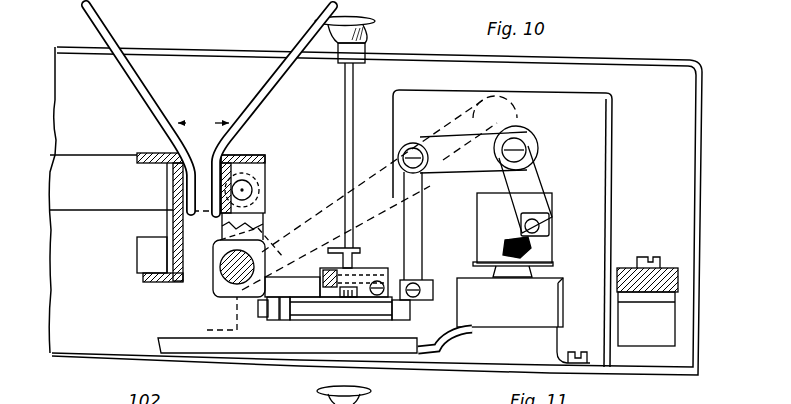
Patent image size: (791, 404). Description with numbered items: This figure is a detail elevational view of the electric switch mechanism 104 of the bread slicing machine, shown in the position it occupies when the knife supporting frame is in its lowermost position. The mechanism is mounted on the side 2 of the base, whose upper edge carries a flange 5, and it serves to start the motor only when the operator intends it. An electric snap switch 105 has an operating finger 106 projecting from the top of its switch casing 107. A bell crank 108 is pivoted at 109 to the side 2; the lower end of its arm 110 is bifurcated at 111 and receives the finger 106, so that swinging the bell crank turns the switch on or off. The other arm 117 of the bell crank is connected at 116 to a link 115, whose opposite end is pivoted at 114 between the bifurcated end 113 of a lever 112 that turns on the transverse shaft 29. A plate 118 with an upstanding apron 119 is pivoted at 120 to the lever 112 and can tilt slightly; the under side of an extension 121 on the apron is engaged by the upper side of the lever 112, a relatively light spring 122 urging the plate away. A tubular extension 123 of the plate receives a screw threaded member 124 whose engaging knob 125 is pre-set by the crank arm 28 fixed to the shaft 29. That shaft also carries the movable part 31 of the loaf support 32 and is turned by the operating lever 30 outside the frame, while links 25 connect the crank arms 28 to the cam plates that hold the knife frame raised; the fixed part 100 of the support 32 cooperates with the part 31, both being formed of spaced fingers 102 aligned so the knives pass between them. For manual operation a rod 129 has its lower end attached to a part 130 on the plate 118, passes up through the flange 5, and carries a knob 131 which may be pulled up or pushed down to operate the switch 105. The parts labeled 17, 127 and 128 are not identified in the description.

The side of the base 2 is at (452, 63).
The flange 5 is at (242, 50).
The receptacle 17 is at (668, 285).
The links 25 is at (92, 205).
The crank arms 28 is at (221, 229).
The transverse shaft 29 is at (226, 278).
The operating lever 30 is at (508, 100).
The movable part of the loaf support 31 is at (313, 25).
The loaf receiving platform 32 is at (203, 124).
The rigid part of the loaf support 100 is at (111, 48).
The fingers 102 is at (209, 109).
The switch mechanism 104 is at (544, 181).
The electric snap switch 105 is at (553, 300).
The operating finger 106 is at (549, 222).
The switch casing 107 is at (565, 283).
The bell crank 108 is at (455, 175).
The pivot 109 is at (538, 141).
The arm of the bell crank 110 is at (543, 188).
The bifurcation 111 is at (549, 229).
The lever 112 is at (297, 285).
The bifurcated end 113 is at (446, 330).
The pivot 114 is at (420, 288).
The link 115 is at (422, 240).
The pivot 116 is at (411, 147).
The arm of the bell crank 117 is at (483, 168).
The plate 118 is at (310, 348).
The apron 119 is at (389, 264).
The pivot 120 is at (377, 296).
The extension 121 is at (358, 262).
The spring 122 is at (315, 327).
The tubular extension 123 is at (323, 327).
The screw threaded member 124 is at (273, 323).
The engaging knob 125 is at (260, 323).
The stop 127 is at (213, 317).
The screw 128 is at (355, 297).
The rod 129 is at (345, 147).
The part on the plate 130 is at (329, 250).
The knob 131 is at (377, 23).